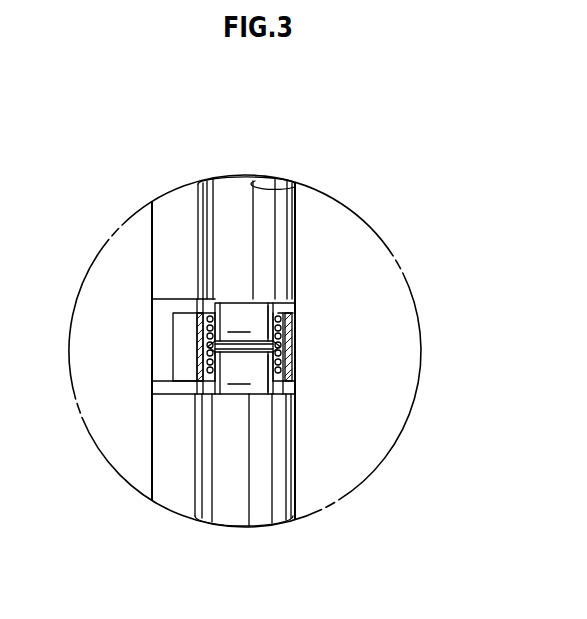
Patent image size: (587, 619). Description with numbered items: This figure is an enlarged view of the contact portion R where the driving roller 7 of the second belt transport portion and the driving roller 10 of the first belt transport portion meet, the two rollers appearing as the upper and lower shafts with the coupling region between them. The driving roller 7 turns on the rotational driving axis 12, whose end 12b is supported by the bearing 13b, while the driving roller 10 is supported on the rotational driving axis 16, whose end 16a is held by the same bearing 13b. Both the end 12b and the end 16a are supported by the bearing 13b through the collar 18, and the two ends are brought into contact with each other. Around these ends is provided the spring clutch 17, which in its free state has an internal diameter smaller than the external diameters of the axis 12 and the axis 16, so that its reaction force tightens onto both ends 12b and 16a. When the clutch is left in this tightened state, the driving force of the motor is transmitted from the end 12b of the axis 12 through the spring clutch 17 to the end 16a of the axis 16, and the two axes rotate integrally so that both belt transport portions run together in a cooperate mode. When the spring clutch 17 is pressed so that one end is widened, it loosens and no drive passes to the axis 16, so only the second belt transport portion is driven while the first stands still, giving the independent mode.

The contact portion R is at (135, 208).
The driving roller 7 is at (287, 240).
The driving roller 10 is at (275, 482).
The rotational driving axis 12 is at (273, 303).
The end of rotational driving axis 12b is at (265, 336).
The bearing 13b is at (178, 368).
The rotational driving axis 16 is at (273, 352).
The end of rotational driving axis 16a is at (264, 358).
The spring clutch 17 is at (293, 323).
The collar 18 is at (293, 352).